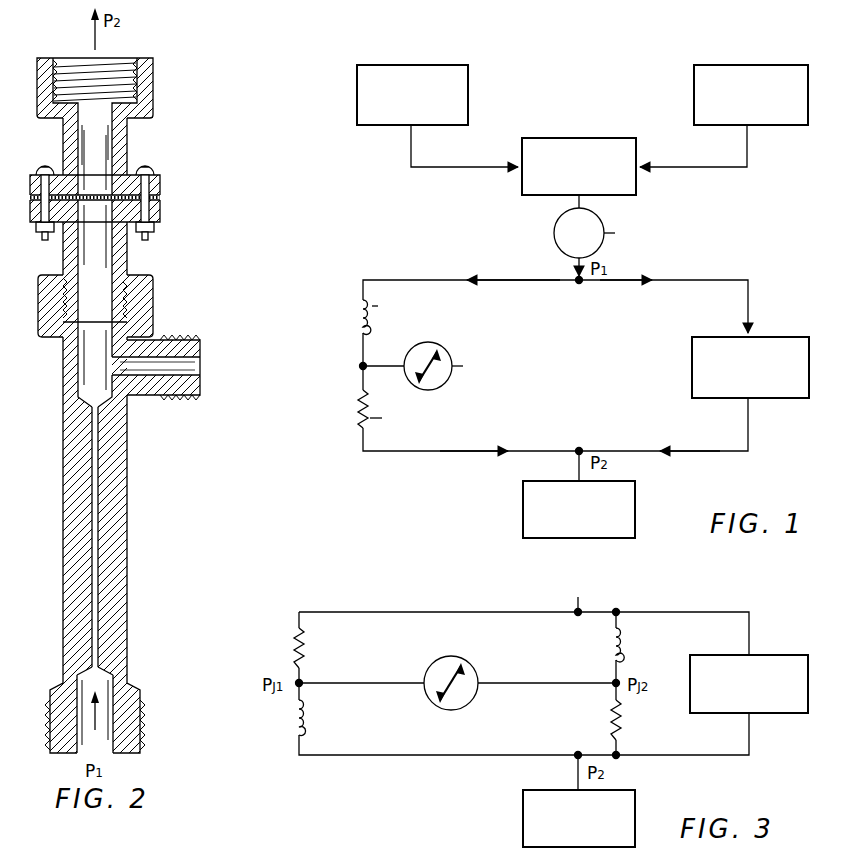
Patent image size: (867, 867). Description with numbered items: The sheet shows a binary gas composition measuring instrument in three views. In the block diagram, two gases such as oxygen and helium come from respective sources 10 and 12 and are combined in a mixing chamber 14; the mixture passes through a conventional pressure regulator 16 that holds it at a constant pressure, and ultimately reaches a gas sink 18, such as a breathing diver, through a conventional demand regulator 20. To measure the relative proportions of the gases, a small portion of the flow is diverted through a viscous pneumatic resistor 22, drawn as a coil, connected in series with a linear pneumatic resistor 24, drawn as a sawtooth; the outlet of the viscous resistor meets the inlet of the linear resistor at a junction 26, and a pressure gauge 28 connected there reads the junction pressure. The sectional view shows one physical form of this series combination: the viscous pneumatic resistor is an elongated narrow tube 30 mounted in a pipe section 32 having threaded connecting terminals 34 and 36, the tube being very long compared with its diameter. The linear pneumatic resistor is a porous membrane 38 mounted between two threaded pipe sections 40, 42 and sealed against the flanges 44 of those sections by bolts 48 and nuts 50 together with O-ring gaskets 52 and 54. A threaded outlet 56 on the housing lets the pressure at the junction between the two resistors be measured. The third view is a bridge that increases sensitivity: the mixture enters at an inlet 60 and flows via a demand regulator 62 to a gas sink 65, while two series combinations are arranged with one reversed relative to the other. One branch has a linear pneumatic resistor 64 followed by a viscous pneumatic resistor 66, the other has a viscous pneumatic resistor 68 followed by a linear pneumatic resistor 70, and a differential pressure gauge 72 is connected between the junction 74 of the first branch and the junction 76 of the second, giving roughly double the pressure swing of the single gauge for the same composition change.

In FIG. 1, the source 10 is at (440, 65).
In FIG. 1, the source 12 is at (778, 65).
In FIG. 1, the mixing chamber 14 is at (606, 138).
In FIG. 1, the pressure regulator 16 is at (555, 224).
In FIG. 1, the gas sink 18 is at (523, 498).
In FIG. 1, the demand regulator 20 is at (790, 337).
In FIG. 1, the viscous pneumatic resistor 22 is at (358, 324).
In FIG. 1, the linear pneumatic resistor 24 is at (357, 418).
In FIG. 1, the junction 26 is at (360, 364).
In FIG. 1, the pressure gauge 28 is at (446, 352).
In FIG. 2, the elongated narrow tube 30 is at (96, 548).
In FIG. 2, the pipe section 32 is at (120, 461).
In FIG. 2, the threaded connecting terminal 34 is at (140, 698).
In FIG. 2, the threaded connecting terminal 36 is at (150, 305).
In FIG. 2, the porous membrane 38 is at (102, 195).
In FIG. 2, the threaded pipe section 40 is at (125, 254).
In FIG. 2, the threaded pipe section 42 is at (121, 133).
In FIG. 2, the flanges 44 is at (160, 206).
In FIG. 2, the bolts 48 is at (155, 167).
In FIG. 2, the nuts 50 is at (82, 58).
In FIG. 2, the O-ring gasket 52 is at (80, 202).
In FIG. 2, the O-ring gasket 54 is at (82, 195).
In FIG. 2, the threaded outlet 56 is at (176, 397).
In FIG. 3, the inlet 60 is at (576, 603).
In FIG. 3, the demand regulator 62 is at (772, 655).
In FIG. 3, the linear pneumatic resistor 64 is at (295, 640).
In FIG. 3, the gas sink 65 is at (523, 801).
In FIG. 3, the viscous pneumatic resistor 66 is at (295, 722).
In FIG. 3, the viscous pneumatic resistor 68 is at (622, 640).
In FIG. 3, the linear pneumatic resistor 70 is at (612, 719).
In FIG. 3, the differential pressure gauge 72 is at (490, 645).
In FIG. 3, the junction 74 is at (302, 693).
In FIG. 3, the junction 76 is at (613, 693).